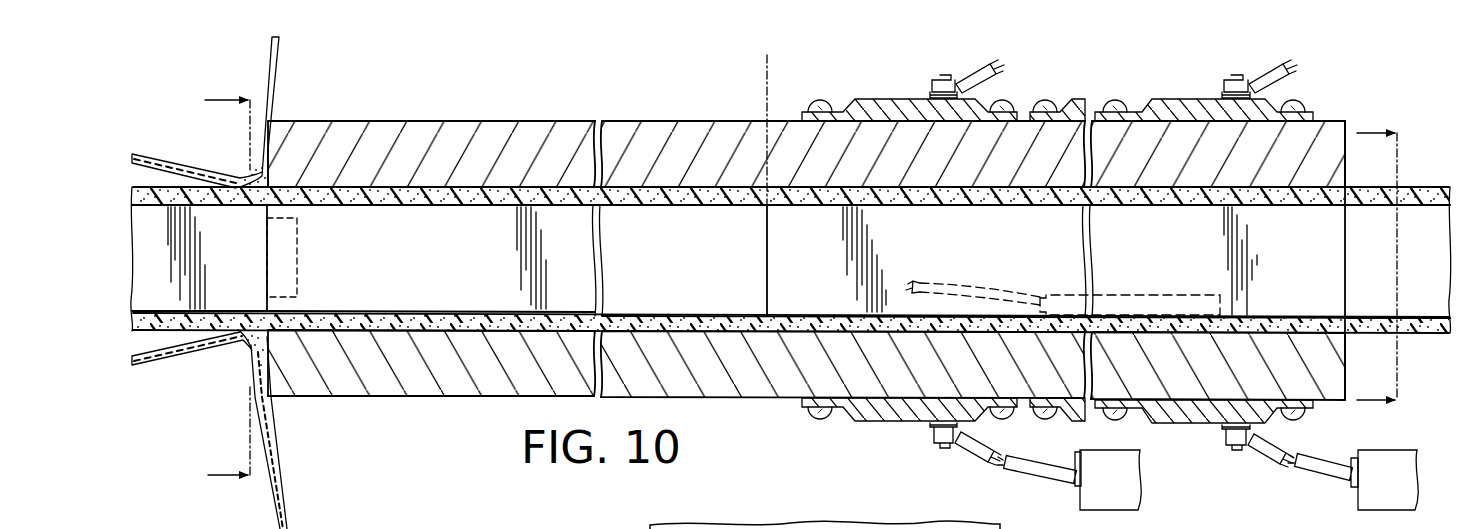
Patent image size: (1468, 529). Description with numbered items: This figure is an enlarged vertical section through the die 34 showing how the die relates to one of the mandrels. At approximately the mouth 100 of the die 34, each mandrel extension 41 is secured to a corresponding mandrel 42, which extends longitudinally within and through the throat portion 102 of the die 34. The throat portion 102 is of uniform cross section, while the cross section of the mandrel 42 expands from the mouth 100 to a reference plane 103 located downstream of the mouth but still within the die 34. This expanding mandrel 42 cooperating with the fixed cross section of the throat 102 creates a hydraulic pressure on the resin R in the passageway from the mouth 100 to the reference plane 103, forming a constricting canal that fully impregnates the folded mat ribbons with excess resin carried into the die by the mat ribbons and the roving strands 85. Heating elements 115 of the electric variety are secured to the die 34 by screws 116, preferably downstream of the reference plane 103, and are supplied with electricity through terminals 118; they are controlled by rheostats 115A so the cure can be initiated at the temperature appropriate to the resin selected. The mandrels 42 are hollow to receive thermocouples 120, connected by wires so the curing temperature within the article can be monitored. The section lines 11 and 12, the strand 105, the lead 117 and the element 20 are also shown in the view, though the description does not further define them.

The die 34 is at (462, 120).
The throat portion 102 is at (358, 187).
The fabric wrap strand 105 is at (276, 75).
The roving strands 85 is at (174, 167).
The resin R is at (246, 176).
The mouth 100 is at (234, 348).
The section line 11 is at (227, 290).
The section line 12 is at (1393, 267).
The mandrel extension 41 is at (238, 265).
The mandrel 42 is at (442, 265).
The reference plane 103 is at (768, 68).
The heating elements 115 is at (906, 99).
The screws 116 is at (827, 106).
The terminals 118 is at (950, 78).
The cable 117 is at (938, 285).
The thermocouples 120 is at (1130, 295).
The conduit 20 is at (1406, 338).
The rheostats 115A is at (1100, 488).